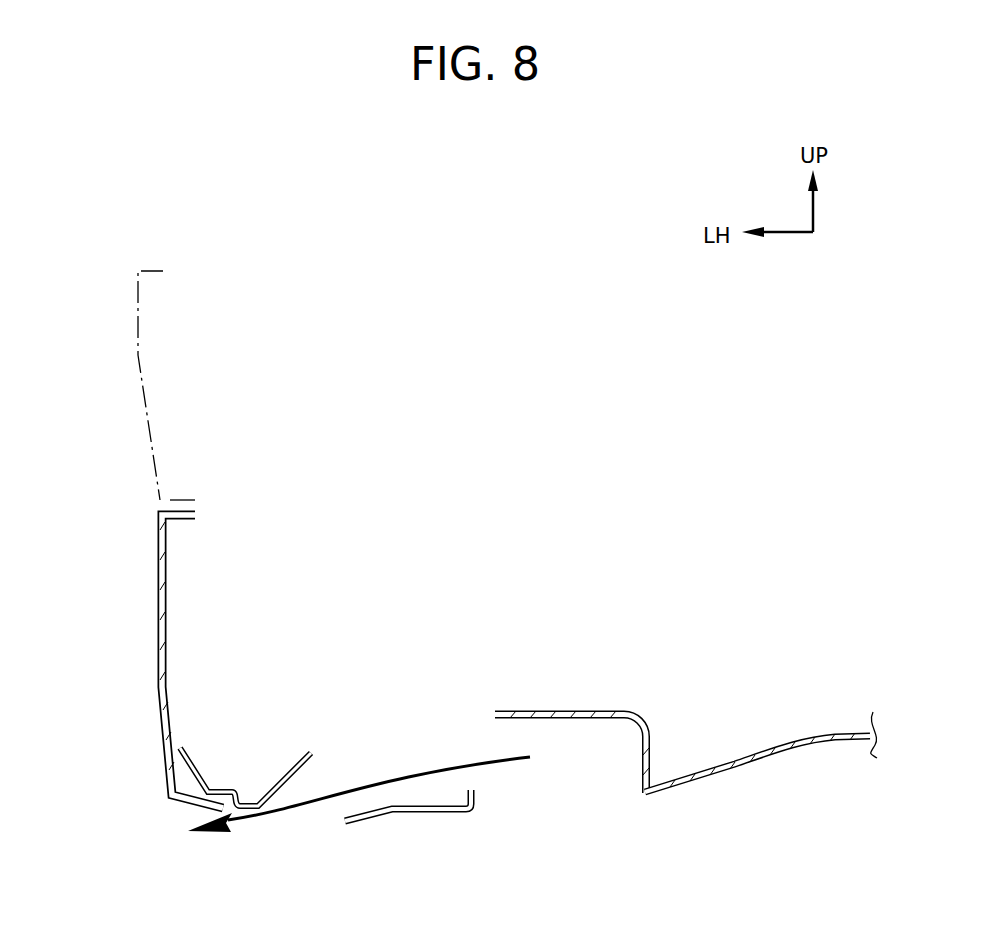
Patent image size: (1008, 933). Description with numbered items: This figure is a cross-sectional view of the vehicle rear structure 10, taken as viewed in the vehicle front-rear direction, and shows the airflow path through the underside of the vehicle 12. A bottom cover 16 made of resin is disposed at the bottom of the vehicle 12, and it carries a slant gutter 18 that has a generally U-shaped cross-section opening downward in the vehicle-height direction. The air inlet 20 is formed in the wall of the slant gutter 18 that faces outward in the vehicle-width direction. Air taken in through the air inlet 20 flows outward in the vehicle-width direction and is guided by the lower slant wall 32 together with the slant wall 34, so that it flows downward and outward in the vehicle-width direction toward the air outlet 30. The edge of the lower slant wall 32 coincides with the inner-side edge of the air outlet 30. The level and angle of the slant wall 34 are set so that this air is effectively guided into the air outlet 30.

The vehicle rear structure 10 is at (443, 670).
The vehicle 12 is at (150, 672).
The bottom cover 16 is at (698, 783).
The slant gutter 18 is at (547, 710).
The air inlet 20 is at (488, 781).
The air outlet 30 is at (336, 827).
The lower slant wall 32 is at (376, 808).
The slant wall 34 is at (311, 746).